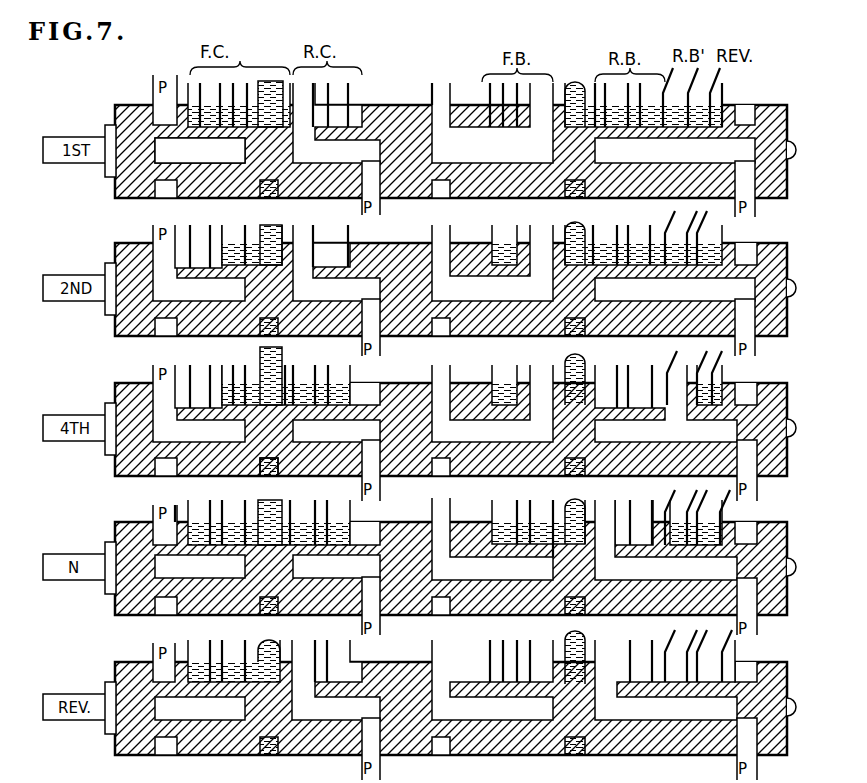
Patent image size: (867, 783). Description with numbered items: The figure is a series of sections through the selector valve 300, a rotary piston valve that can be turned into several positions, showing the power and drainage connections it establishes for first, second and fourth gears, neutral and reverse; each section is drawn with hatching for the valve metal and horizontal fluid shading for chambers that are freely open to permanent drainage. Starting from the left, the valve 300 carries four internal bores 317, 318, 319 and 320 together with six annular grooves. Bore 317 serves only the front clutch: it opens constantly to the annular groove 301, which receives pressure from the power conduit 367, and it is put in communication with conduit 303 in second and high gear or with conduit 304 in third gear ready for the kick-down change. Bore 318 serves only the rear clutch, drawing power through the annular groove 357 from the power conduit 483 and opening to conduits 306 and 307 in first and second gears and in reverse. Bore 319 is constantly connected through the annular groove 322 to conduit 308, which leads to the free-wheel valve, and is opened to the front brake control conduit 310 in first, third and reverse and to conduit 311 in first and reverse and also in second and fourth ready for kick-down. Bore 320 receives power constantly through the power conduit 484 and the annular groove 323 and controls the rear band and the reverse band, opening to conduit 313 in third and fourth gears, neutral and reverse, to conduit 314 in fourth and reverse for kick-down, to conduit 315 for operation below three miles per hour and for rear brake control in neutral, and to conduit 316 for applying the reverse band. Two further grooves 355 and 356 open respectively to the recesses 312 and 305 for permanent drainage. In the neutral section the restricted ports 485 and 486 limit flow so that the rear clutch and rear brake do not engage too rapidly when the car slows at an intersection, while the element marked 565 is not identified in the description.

The selector valve 300 is at (490, 180).
The annular groove 301 is at (166, 196).
The conduit 303 is at (203, 388).
The conduit 304 is at (203, 258).
The recess 305 is at (271, 363).
The conduit 306 is at (330, 82).
The conduit 307 is at (345, 96).
The conduit 308 is at (432, 88).
The conduit 310 is at (496, 230).
The conduit 311 is at (533, 230).
The recess 312 is at (577, 84).
The conduit 313 is at (602, 127).
The conduit 314 is at (638, 127).
The conduit 315 is at (705, 73).
The conduit 316 is at (697, 100).
The bore 317 is at (200, 502).
The bore 318 is at (336, 473).
The bore 319 is at (492, 473).
The bore 320 is at (675, 499).
The annular groove 322 is at (470, 142).
The annular groove 323 is at (745, 120).
The annular groove 355 is at (570, 198).
The annular groove 356 is at (266, 198).
The annular groove 357 is at (336, 330).
The power conduit 367 is at (153, 92).
The power conduit 483 is at (384, 209).
The power conduit 484 is at (757, 209).
The restricted port 485 is at (278, 478).
The restricted port 486 is at (675, 522).
The port 565 is at (459, 760).